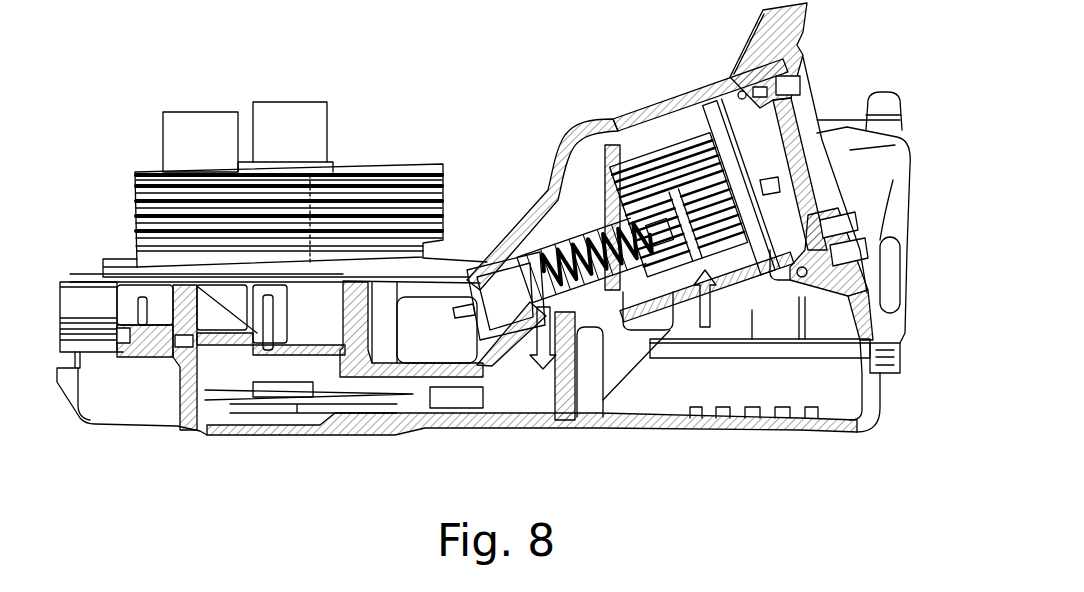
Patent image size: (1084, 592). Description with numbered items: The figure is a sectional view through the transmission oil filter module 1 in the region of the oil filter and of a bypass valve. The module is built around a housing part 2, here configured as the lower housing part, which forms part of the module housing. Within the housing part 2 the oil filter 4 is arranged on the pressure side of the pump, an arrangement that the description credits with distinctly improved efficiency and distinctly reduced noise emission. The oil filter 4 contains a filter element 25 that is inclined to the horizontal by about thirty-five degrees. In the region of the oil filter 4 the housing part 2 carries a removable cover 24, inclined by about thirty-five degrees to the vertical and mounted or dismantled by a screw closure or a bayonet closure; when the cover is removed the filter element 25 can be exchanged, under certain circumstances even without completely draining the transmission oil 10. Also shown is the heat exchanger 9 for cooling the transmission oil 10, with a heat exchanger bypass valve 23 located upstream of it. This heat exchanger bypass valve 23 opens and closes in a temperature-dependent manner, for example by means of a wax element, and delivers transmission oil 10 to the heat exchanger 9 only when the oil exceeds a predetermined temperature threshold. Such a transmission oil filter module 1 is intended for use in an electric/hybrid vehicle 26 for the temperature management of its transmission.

The transmission oil filter module 1 is at (377, 127).
The housing part 2 is at (266, 436).
The oil filter 4 is at (626, 176).
The heat exchanger 9 is at (150, 210).
The transmission oil 10 is at (548, 335).
The heat exchanger bypass valve 23 is at (500, 290).
The removable cover 24 is at (803, 100).
The filter element 25 is at (640, 153).
The electric/hybrid vehicle 26 is at (203, 99).